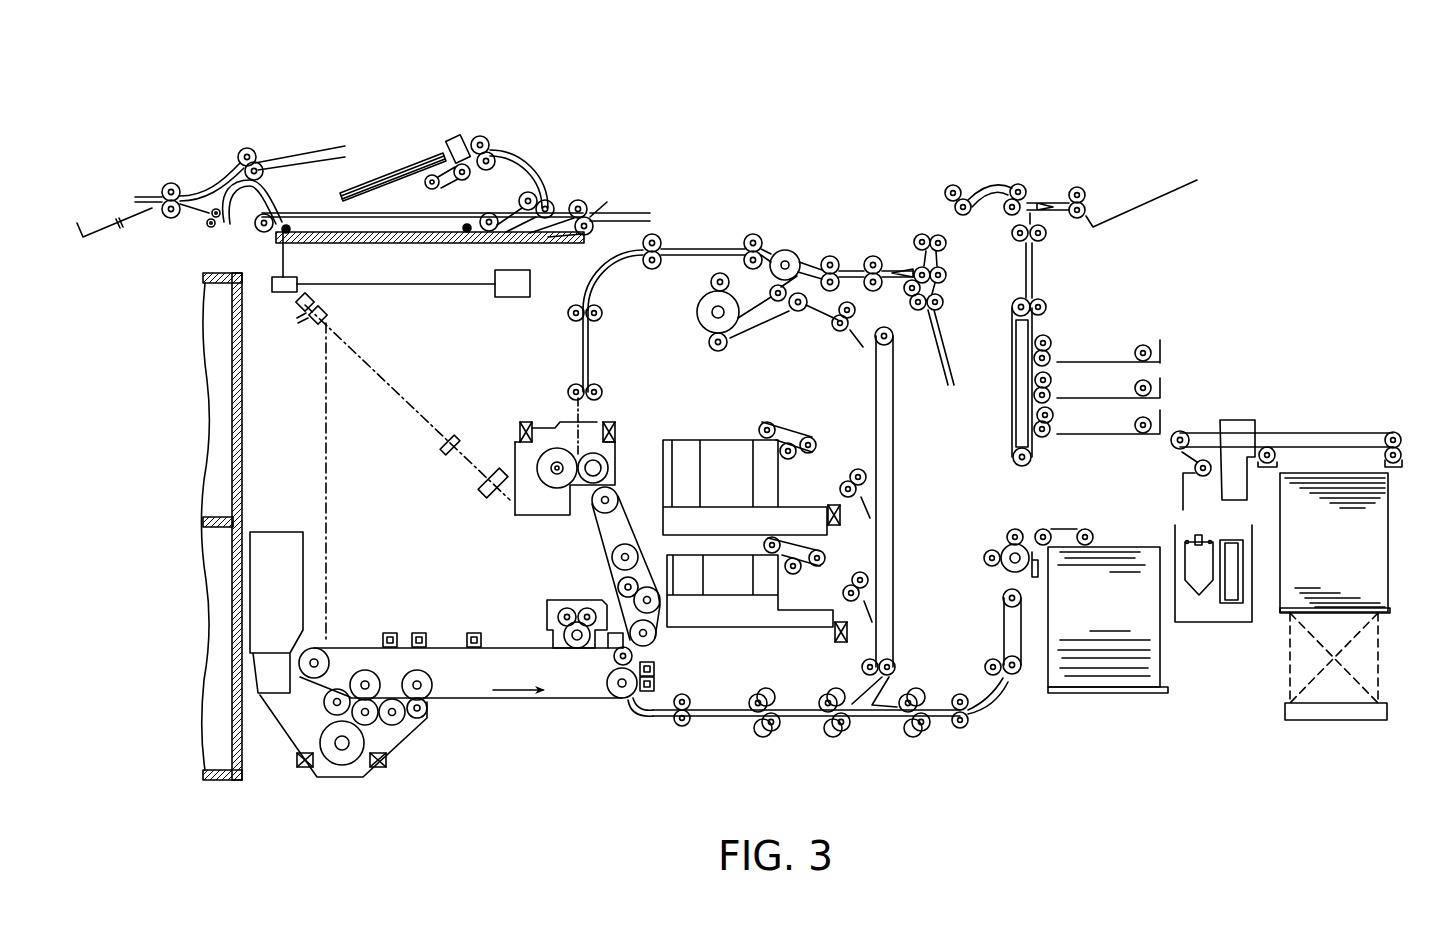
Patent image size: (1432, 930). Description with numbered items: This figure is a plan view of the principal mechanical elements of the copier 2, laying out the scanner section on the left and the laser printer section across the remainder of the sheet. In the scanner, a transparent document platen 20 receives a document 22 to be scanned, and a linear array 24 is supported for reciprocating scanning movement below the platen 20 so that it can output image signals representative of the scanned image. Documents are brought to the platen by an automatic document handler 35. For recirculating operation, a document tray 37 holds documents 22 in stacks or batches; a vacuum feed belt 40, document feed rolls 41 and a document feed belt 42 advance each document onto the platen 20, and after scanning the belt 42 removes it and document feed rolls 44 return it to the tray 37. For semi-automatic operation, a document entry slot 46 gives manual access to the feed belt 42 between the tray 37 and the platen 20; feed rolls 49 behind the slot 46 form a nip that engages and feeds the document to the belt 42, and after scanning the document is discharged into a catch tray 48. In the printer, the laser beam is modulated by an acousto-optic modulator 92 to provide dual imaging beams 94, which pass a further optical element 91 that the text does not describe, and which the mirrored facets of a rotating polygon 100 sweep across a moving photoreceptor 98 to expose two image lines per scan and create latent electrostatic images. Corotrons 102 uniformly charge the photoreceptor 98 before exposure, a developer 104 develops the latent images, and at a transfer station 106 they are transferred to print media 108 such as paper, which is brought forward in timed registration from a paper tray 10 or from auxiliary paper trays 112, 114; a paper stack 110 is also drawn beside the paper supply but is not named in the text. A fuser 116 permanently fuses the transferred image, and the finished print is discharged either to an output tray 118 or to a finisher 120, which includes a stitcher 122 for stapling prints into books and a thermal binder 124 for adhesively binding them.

The copier 2 is at (762, 169).
The paper tray 10 is at (199, 166).
The document platen 20 is at (430, 244).
The document 22 is at (388, 200).
The linear array 24 is at (277, 274).
The automatic document handler 35 is at (408, 136).
The document tray 37 is at (426, 190).
The vacuum feed belt 40 is at (525, 197).
The document feed rolls 41 is at (489, 136).
The document feed belt 42 is at (440, 212).
The document feed rolls 44 is at (291, 176).
The document entry slot 46 is at (623, 196).
The catch tray 48 is at (138, 215).
The feed rolls 49 is at (578, 199).
The detector 91 is at (494, 494).
The acousto-optic modulator 92 is at (458, 437).
The imaging beams 94 is at (423, 404).
The photoreceptor 98 is at (512, 647).
The rotating polygon 100 is at (320, 323).
The corotrons 102 is at (473, 632).
The developer 104 is at (407, 733).
The transfer station 106 is at (626, 716).
The print media 108 is at (1143, 668).
The stack 110 is at (1107, 693).
The auxiliary paper tray 112 is at (729, 622).
The auxiliary paper tray 114 is at (728, 437).
The fuser 116 is at (628, 446).
The output tray 118 is at (1173, 187).
The finisher 120 is at (1212, 362).
The stitcher 122 is at (1160, 381).
The thermal binder 124 is at (1311, 420).